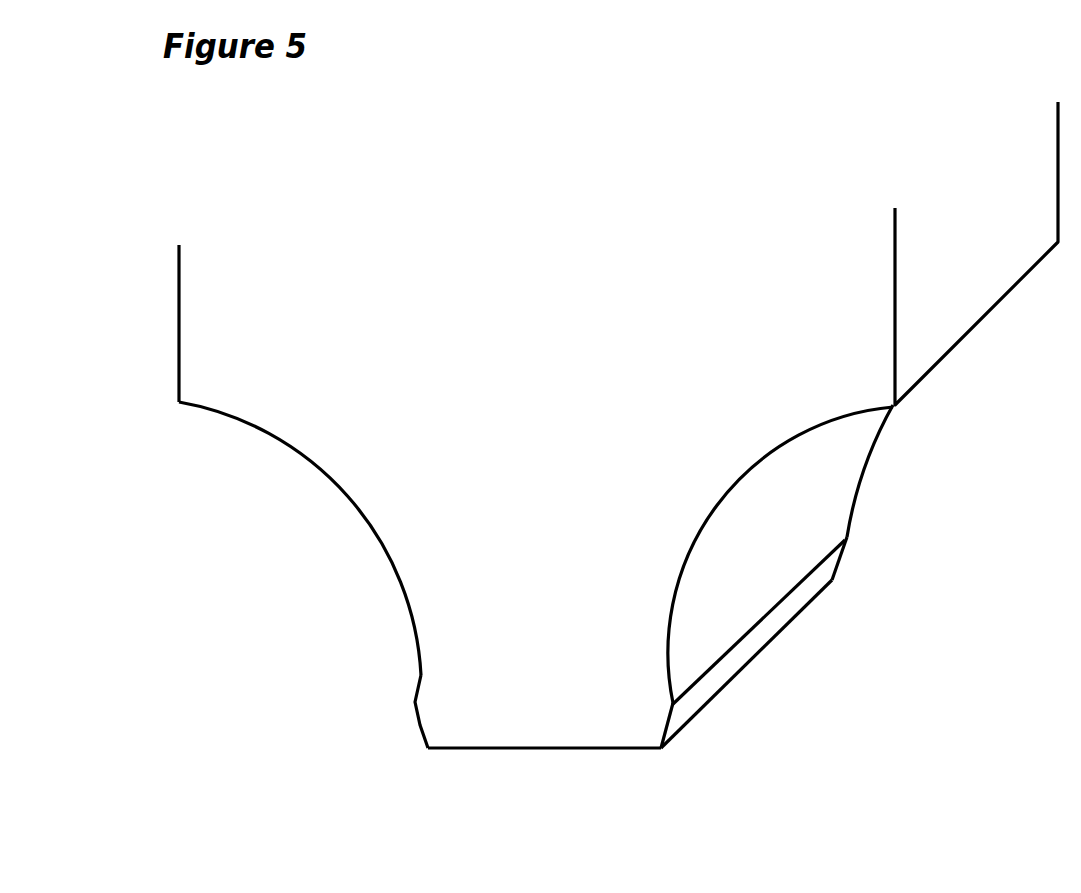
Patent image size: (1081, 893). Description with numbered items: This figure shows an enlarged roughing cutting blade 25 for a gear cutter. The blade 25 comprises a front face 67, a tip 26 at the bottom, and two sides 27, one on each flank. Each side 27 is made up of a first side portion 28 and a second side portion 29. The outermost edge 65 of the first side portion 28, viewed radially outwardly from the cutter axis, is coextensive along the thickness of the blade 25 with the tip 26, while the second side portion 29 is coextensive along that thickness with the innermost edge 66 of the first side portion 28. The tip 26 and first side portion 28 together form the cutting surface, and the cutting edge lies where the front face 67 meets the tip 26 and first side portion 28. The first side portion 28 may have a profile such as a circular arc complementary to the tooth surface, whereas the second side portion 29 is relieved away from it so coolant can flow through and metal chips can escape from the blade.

The blade 25 is at (601, 240).
The tip 26 is at (545, 750).
The side 27 is at (270, 604).
The first side portion 28 is at (420, 727).
The second side portion 29 is at (389, 547).
The outermost edge 65 is at (768, 643).
The innermost edge 66 is at (817, 562).
The front face 67 is at (568, 580).